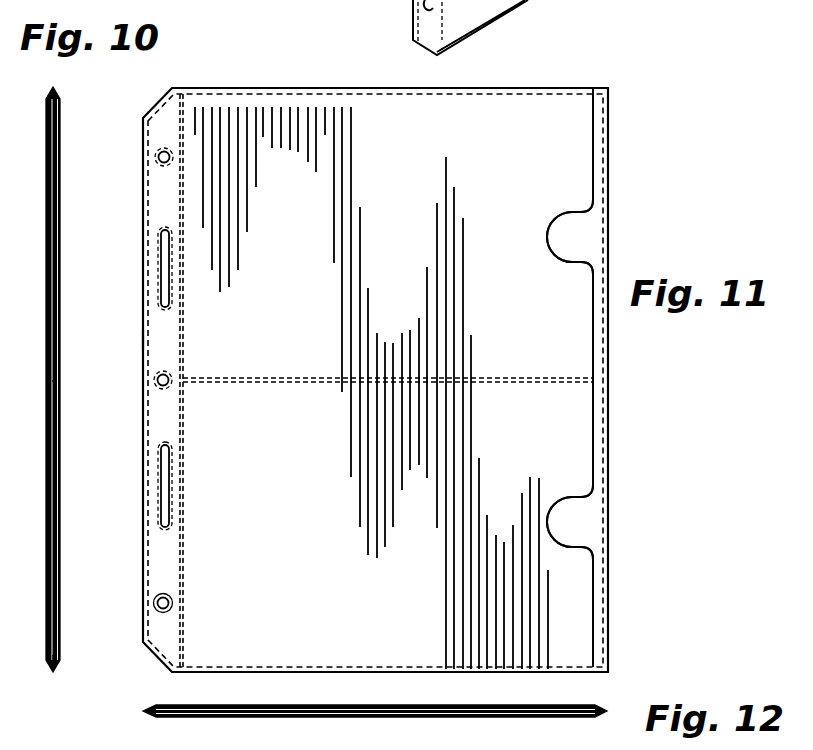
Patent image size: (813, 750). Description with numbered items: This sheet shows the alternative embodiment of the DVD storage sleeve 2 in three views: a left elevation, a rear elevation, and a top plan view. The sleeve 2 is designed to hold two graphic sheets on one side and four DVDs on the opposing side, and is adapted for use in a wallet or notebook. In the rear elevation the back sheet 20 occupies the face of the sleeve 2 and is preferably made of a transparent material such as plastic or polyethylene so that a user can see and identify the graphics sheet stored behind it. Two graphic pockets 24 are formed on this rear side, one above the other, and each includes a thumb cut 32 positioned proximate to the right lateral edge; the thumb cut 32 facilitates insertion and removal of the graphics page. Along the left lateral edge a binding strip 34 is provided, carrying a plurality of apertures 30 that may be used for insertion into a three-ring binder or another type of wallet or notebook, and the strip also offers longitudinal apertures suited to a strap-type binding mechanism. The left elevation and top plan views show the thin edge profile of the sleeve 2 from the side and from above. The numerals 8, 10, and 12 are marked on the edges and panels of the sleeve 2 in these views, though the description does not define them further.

In FIG. 11, the DVD storage sleeve 2 is at (600, 64).
In FIG. 10, the edge/strip of sheet 8 is at (60, 89).
In FIG. 11, the edge/strip of sheet 8 is at (610, 190).
In FIG. 10, the binding edge 10 is at (57, 660).
In FIG. 11, the binding edge 10 is at (143, 337).
In FIG. 10, the sheet panel 12 is at (110, 281).
In FIG. 11, the sheet panel 12 is at (462, 88).
In FIG. 12, the sheet panel 12 is at (638, 688).
In FIG. 11, the back sheet 20 is at (314, 98).
In FIG. 11, the graphics pocket 24 is at (568, 524).
In FIG. 11, the apertures 30 is at (155, 157).
In FIG. 11, the thumb cut 32 is at (562, 497).
In FIG. 11, the binding strip 34 is at (153, 212).